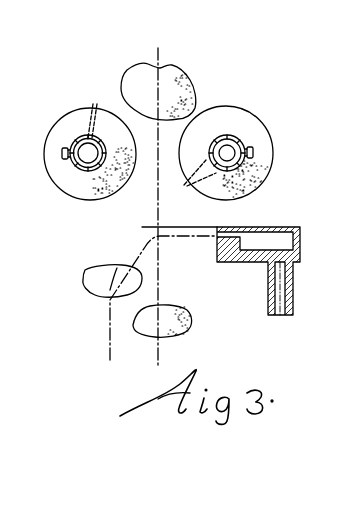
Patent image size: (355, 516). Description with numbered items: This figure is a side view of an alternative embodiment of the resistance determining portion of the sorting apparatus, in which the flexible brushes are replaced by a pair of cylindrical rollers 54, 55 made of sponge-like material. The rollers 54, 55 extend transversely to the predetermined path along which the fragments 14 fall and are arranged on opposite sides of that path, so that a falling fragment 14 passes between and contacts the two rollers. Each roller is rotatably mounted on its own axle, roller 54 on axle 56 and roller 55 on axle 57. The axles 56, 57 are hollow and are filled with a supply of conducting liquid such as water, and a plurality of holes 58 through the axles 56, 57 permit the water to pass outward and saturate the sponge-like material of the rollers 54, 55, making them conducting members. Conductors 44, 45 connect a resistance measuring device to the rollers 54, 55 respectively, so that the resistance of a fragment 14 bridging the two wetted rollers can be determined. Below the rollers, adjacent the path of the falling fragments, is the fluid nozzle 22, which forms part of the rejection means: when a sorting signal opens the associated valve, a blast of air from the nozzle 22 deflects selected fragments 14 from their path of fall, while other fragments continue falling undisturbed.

The fragments 14 is at (172, 82).
The fluid nozzle 22 is at (300, 232).
The conductor 44 is at (63, 150).
The conductor 45 is at (248, 142).
The cylindrical roller 54 is at (62, 181).
The cylindrical roller 55 is at (266, 152).
The axle 56 is at (88, 158).
The axle 57 is at (267, 178).
The holes 58 is at (150, 146).